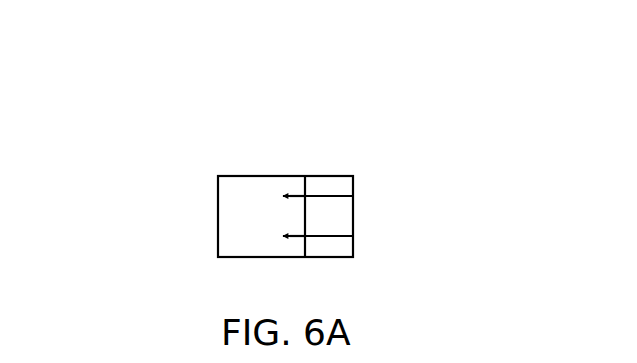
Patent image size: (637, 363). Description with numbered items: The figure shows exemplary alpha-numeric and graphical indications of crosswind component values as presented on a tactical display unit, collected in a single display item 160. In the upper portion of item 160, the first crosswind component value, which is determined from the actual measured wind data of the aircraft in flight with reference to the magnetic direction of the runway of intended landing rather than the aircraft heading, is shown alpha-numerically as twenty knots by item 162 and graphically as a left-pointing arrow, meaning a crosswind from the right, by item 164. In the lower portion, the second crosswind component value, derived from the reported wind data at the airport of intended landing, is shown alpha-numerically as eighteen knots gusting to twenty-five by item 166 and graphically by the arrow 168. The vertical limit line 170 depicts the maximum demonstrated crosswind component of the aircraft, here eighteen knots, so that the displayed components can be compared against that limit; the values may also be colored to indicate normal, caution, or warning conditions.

The crosswind component indication 160 is at (143, 49).
The limit line 170 is at (305, 156).
The alpha-numeric depiction of first crosswind component value 162 is at (206, 197).
The alpha-numeric depiction of second crosswind component value 166 is at (206, 236).
The graphical depiction of first crosswind component value 164 is at (368, 198).
The graphical depiction of second crosswind component value 168 is at (368, 237).